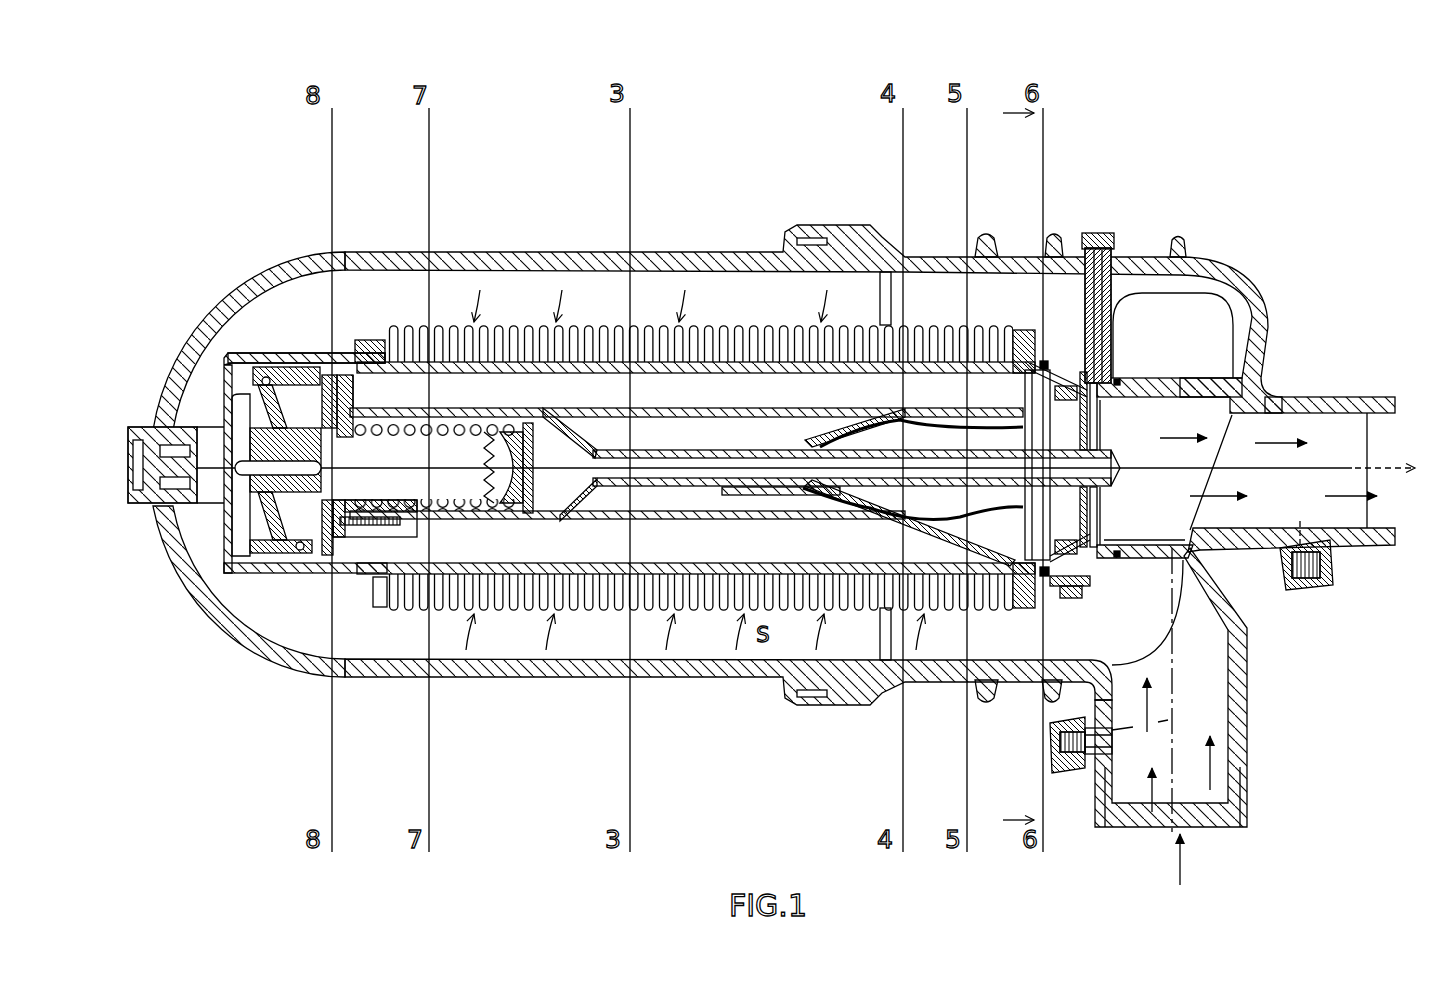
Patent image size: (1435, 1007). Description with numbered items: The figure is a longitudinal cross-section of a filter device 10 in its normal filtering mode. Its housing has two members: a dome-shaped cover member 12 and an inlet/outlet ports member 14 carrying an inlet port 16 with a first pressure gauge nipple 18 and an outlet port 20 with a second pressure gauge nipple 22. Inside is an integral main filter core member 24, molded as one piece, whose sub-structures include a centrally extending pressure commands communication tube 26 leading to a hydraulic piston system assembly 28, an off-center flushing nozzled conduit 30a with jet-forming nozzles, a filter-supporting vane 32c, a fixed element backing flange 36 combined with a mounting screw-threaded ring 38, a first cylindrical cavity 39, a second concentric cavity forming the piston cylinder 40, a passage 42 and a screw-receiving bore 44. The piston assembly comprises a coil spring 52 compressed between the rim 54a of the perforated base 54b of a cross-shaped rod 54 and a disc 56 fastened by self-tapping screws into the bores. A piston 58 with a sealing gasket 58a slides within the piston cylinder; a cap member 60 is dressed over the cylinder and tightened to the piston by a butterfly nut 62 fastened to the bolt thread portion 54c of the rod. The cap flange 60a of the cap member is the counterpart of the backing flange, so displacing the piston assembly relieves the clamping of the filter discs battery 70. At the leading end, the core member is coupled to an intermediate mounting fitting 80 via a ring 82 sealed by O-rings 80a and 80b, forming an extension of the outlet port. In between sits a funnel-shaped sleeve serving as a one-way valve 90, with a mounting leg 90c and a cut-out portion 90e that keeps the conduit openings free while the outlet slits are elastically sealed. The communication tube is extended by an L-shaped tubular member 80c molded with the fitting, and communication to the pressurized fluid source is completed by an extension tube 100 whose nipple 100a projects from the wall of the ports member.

The filter device 10 is at (1238, 168).
The dome-shaped cover member 12 is at (262, 252).
The inlet/outlet ports member 14 is at (1252, 270).
The inlet port 16 is at (1198, 835).
The first pressure gauge nipple 18 is at (1072, 778).
The outlet port 20 is at (1380, 395).
The second pressure gauge nipple 22 is at (1312, 592).
The integral main filter core member 24 is at (681, 450).
The pressure commands communication tube 26 is at (653, 475).
The hydraulic piston system assembly 28 is at (291, 348).
The flushing nozzled conduit 30a is at (708, 385).
The filter-supporting vane 32c is at (522, 608).
The fixed element backing flange 36 is at (1022, 350).
The mounting screw-threaded ring 38 is at (1050, 590).
The first cylindrical cavity 39 is at (417, 418).
The piston cylinder 40 is at (322, 385).
The passage 42 is at (805, 497).
The screw-receiving bore 44 is at (330, 572).
The coil spring 52 is at (465, 420).
The cross-shaped rod 54 is at (433, 478).
The rim 54a is at (527, 520).
The perforated base 54b is at (520, 472).
The bolt thread portion 54c is at (160, 506).
The disc 56 is at (300, 565).
The piston 58 is at (255, 540).
The sealing gasket 58a is at (258, 556).
The cap member 60 is at (250, 525).
The cap flange 60a is at (375, 340).
The butterfly nut 62 is at (238, 412).
The filter discs battery 70 is at (570, 340).
The intermediate mounting fitting 80 is at (1092, 583).
The O-ring 80a is at (1020, 578).
The O-ring 80b is at (1104, 542).
The L-shaped tubular member 80c is at (1108, 442).
The ring 82 is at (1078, 607).
The one-way valve 90 is at (803, 493).
The mounting leg 90c is at (737, 500).
The cut-out portion 90e is at (912, 562).
The extension tube 100 is at (1095, 245).
The nipple 100a is at (1118, 235).